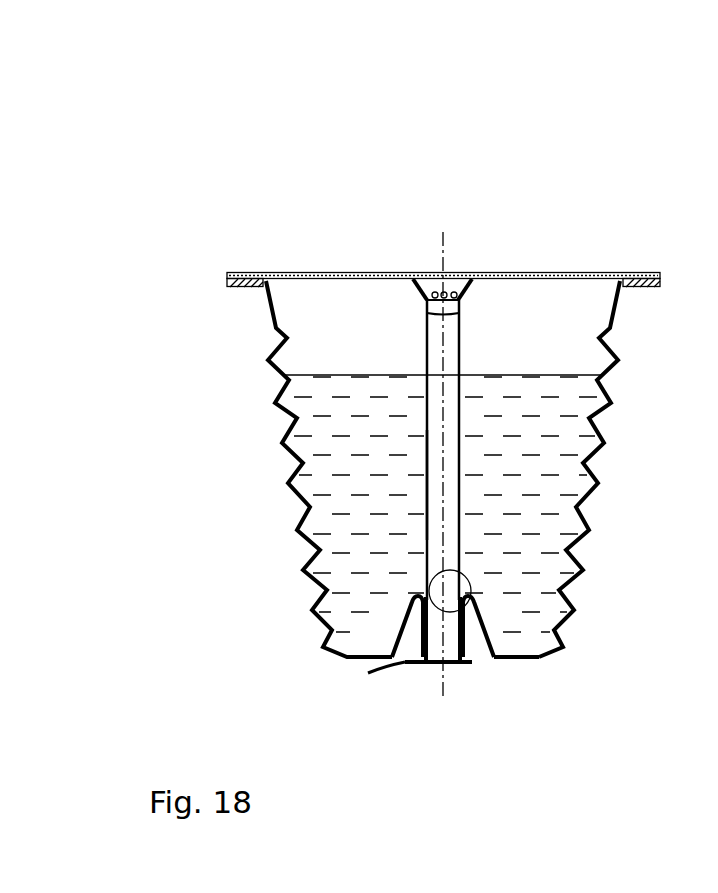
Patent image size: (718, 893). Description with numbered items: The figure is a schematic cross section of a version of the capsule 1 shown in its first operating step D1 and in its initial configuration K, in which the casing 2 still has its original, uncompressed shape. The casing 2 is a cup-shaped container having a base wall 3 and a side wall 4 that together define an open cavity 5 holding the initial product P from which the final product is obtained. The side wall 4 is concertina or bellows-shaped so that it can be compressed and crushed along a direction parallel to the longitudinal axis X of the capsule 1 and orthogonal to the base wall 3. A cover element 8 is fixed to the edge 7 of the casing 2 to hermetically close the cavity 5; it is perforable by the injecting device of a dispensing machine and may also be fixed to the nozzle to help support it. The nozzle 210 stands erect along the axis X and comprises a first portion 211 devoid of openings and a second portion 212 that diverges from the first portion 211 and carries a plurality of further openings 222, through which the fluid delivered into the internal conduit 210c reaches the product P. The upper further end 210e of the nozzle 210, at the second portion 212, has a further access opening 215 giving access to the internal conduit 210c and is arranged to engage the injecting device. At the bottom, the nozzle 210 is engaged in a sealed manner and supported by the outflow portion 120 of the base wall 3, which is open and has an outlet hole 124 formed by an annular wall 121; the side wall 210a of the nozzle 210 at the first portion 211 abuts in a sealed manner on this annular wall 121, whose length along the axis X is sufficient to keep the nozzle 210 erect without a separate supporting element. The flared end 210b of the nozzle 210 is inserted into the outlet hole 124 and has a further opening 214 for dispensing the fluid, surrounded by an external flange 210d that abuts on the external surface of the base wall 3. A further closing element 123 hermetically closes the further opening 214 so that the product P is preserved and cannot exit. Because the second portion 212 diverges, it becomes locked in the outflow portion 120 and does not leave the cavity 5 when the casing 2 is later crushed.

The capsule 1 is at (230, 135).
The edge 7 is at (226, 278).
The cover element 8 is at (312, 273).
The further access opening 215 is at (431, 283).
The longitudinal axis X is at (444, 246).
The further end 210e is at (460, 293).
The internal conduit 210c is at (427, 308).
The cavity 5 is at (399, 361).
The further openings 222 is at (461, 304).
The nozzle 210 is at (435, 466).
The second portion 212 is at (492, 341).
The initial product P is at (340, 457).
The side wall 4 is at (600, 483).
The side wall of the nozzle 210a is at (427, 486).
The first portion 211 is at (403, 552).
The outlet hole 124 is at (583, 568).
The end 210b is at (437, 627).
The casing 2 is at (474, 483).
The outflow portion 120 is at (514, 637).
The first operating step D1 is at (249, 664).
The base wall 3 is at (352, 660).
The annular wall 121 is at (422, 635).
The external flange 210d is at (424, 655).
The further opening 214 is at (453, 660).
The further closing element 123 is at (468, 662).
The initial configuration K is at (618, 721).